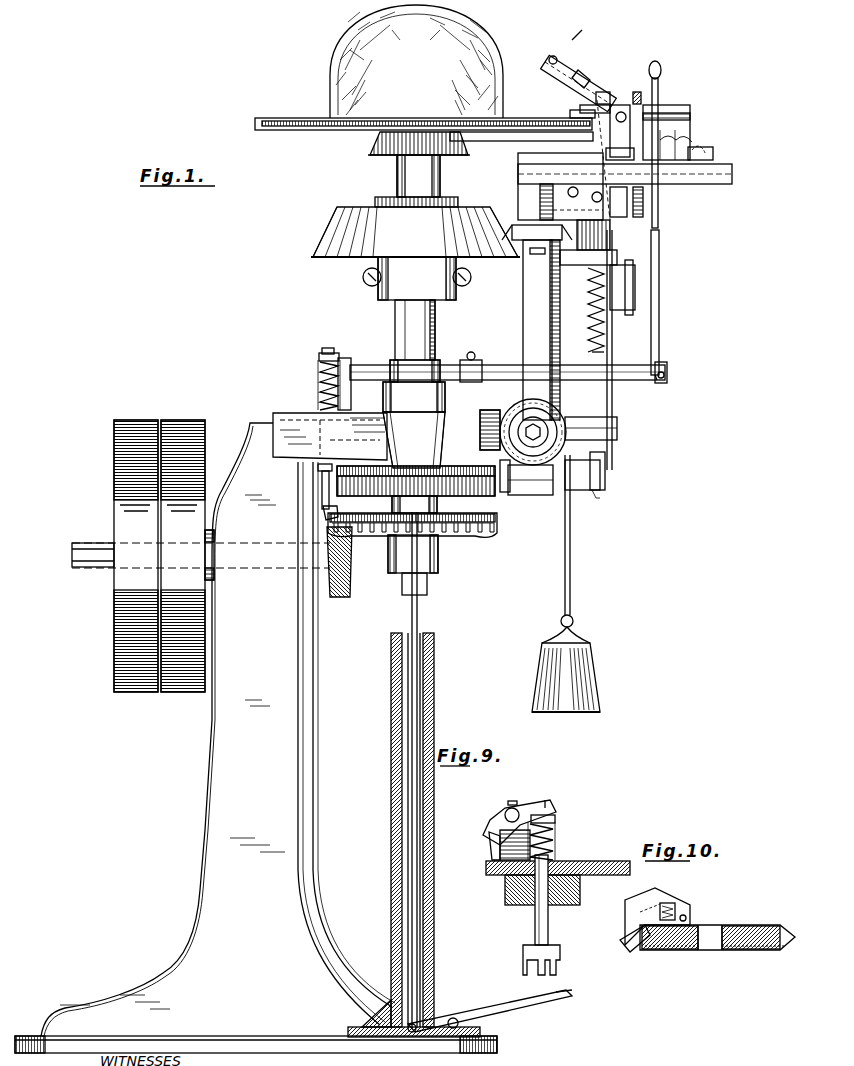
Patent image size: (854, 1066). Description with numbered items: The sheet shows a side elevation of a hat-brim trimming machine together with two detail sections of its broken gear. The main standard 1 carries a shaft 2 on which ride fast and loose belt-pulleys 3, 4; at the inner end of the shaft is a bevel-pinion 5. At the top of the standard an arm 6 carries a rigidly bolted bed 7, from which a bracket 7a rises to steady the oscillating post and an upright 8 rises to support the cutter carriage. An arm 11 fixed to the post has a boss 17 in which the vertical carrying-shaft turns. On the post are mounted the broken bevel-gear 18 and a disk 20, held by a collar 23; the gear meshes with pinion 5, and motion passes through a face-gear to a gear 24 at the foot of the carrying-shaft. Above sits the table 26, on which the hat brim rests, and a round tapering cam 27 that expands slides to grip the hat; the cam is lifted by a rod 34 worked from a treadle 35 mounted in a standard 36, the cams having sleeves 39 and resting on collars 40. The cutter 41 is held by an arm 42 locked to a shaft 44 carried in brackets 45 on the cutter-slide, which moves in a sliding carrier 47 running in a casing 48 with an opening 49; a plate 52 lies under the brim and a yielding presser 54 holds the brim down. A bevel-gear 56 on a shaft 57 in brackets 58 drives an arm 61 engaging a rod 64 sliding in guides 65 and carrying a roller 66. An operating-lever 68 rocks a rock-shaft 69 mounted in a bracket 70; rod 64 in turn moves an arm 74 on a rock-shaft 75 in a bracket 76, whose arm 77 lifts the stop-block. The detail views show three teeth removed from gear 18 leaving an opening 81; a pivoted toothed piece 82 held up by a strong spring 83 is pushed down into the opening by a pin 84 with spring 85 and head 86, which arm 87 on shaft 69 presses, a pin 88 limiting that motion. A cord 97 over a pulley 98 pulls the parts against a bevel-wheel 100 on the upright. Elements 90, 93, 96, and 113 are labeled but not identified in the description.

In FIG. 1, the main standard 1 is at (256, 738).
In FIG. 1, the shaft 2 is at (80, 543).
In FIG. 1, the fast belt-pulley 3 is at (136, 556).
In FIG. 1, the loose belt-pulley 4 is at (183, 556).
In FIG. 1, the bevel-pinion 5 is at (344, 592).
In FIG. 9, the arm 6 is at (505, 889).
In FIG. 1, the bed 7 is at (292, 412).
In FIG. 1, the bracket 7a is at (365, 285).
In FIG. 1, the upright 8 is at (541, 330).
In FIG. 1, the arm 11 is at (414, 397).
In FIG. 1, the boss 17 is at (414, 440).
In FIG. 1, the broken bevel-gear 18 is at (480, 538).
In FIG. 10, the broken bevel-gear 18 is at (757, 950).
In FIG. 1, the disk 20 is at (320, 469).
In FIG. 1, the collar 23 is at (440, 570).
In FIG. 1, the gear 24 is at (416, 489).
In FIG. 1, the table 26 is at (272, 130).
In FIG. 1, the round tapering cam 27 is at (375, 156).
In FIG. 1, the rod 34 is at (418, 620).
In FIG. 1, the treadle 35 is at (497, 1007).
In FIG. 1, the standard 36 is at (391, 698).
In FIG. 1, the sleeves 39 is at (440, 180).
In FIG. 1, the collars 40 is at (415, 371).
In FIG. 1, the cutter 41 is at (572, 42).
In FIG. 1, the cutter-arm 42 is at (596, 76).
In FIG. 1, the shaft 44 is at (613, 160).
In FIG. 1, the brackets 45 is at (620, 153).
In FIG. 1, the sliding carrier 47 is at (722, 184).
In FIG. 1, the casing 48 is at (635, 210).
In FIG. 1, the opening 49 is at (518, 192).
In FIG. 1, the plate 52 is at (580, 108).
In FIG. 1, the yielding presser 54 is at (562, 76).
In FIG. 1, the bevel-gear 56 is at (636, 92).
In FIG. 1, the shaft 57 is at (671, 106).
In FIG. 1, the brackets 58 is at (690, 120).
In FIG. 1, the arm 61 is at (596, 98).
In FIG. 1, the rod 64 is at (612, 396).
In FIG. 1, the guides 65 is at (590, 265).
In FIG. 1, the roller 66 is at (626, 312).
In FIG. 1, the operating-lever 68 is at (659, 288).
In FIG. 1, the rock-shaft 69 is at (628, 366).
In FIG. 9, the rock-shaft 69 is at (506, 812).
In FIG. 1, the bracket 70 is at (344, 358).
In FIG. 9, the bracket 70 is at (515, 845).
In FIG. 1, the arm 74 is at (606, 474).
In FIG. 1, the rock-shaft 75 is at (580, 490).
In FIG. 1, the bracket 76 is at (533, 495).
In FIG. 1, the arm 77 is at (506, 492).
In FIG. 10, the opening 81 is at (640, 940).
In FIG. 1, the piece 82 is at (323, 513).
In FIG. 10, the piece 82 is at (651, 914).
In FIG. 10, the spring 83 is at (668, 903).
In FIG. 1, the pin 84 is at (322, 490).
In FIG. 9, the pin 84 is at (548, 923).
In FIG. 1, the spring 85 is at (318, 378).
In FIG. 9, the spring 85 is at (555, 840).
In FIG. 1, the head 86 is at (320, 355).
In FIG. 9, the head 86 is at (556, 818).
In FIG. 1, the arm 87 is at (326, 349).
In FIG. 9, the arm 87 is at (545, 800).
In FIG. 9, the pin 88 is at (492, 848).
In FIG. 1, the block 90 is at (478, 364).
In FIG. 1, the hand wheel 93 is at (523, 432).
In FIG. 1, the spring 96 is at (590, 322).
In FIG. 1, the cord 97 is at (571, 574).
In FIG. 1, the pulley 98 is at (566, 669).
In FIG. 1, the bevel-wheel 100 is at (537, 232).
In FIG. 1, the plate end 113 is at (500, 141).